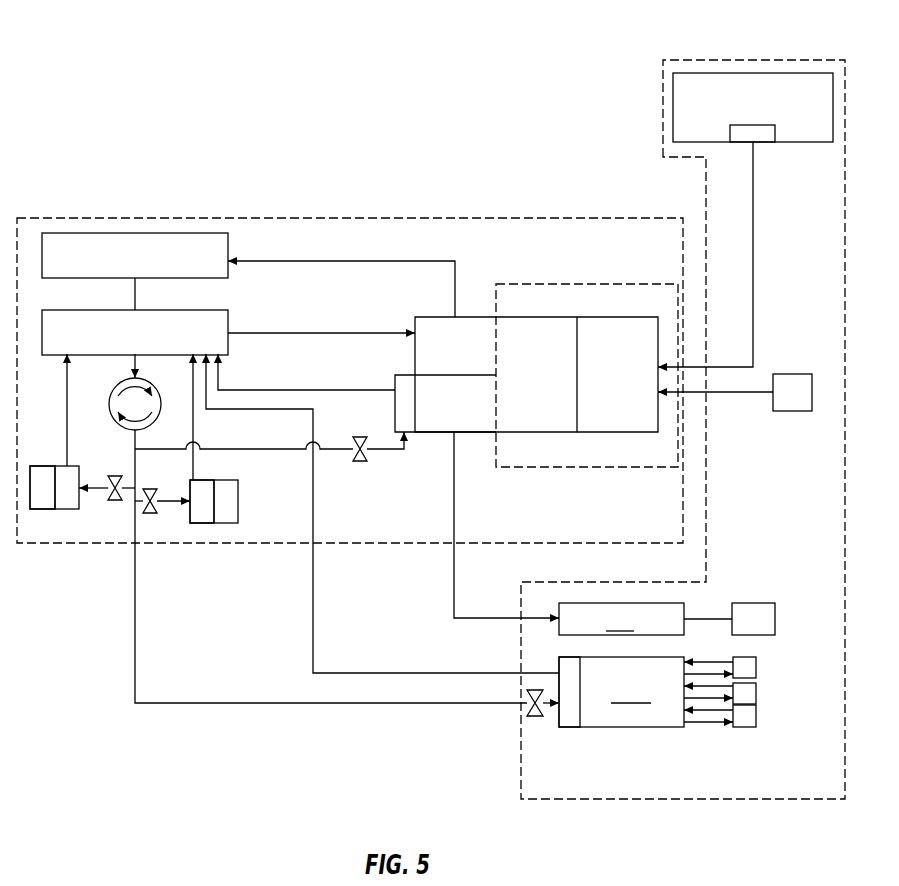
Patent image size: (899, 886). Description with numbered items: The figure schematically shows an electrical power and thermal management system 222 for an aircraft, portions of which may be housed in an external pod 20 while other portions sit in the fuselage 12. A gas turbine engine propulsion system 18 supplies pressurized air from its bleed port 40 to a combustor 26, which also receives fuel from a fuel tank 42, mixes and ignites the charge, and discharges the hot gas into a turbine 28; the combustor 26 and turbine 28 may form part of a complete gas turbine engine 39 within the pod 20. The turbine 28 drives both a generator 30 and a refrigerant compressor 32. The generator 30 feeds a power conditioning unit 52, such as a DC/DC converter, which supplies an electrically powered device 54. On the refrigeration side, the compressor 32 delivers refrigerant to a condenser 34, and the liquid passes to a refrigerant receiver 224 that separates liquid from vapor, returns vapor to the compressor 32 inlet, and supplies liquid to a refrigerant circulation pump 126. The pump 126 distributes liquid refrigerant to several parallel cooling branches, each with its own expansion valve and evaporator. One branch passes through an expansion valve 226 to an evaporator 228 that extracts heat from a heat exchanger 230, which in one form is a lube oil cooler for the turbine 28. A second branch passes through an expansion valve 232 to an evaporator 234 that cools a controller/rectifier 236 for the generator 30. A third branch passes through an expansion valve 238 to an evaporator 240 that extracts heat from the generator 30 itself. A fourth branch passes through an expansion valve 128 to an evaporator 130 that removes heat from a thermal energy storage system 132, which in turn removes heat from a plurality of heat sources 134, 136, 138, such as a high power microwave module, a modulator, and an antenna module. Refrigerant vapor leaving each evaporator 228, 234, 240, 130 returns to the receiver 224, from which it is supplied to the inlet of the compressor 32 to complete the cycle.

The electrical power and thermal management system 222 is at (143, 93).
The fuselage 12 is at (663, 108).
The gas turbine engine propulsion system 18 is at (753, 73).
The bleed port 40 is at (752, 125).
The fuel tank 42 is at (793, 411).
The external pod 20 is at (350, 218).
The condenser 34 is at (228, 245).
The refrigerant receiver 224 is at (228, 345).
The gas turbine engine 39 is at (600, 284).
The refrigerant compressor 32 is at (462, 317).
The turbine 28 is at (538, 317).
The combustor 26 is at (620, 318).
The evaporator 240 is at (395, 415).
The generator 30 is at (465, 432).
The expansion valve 238 is at (362, 461).
The refrigerant circulation pump 126 is at (110, 410).
The heat exchanger 230 is at (43, 466).
The evaporator 228 is at (75, 509).
The expansion valve 226 is at (115, 500).
The expansion valve 232 is at (150, 514).
The evaporator 234 is at (200, 523).
The controller/rectifier 236 is at (230, 480).
The power conditioning unit 52 is at (621, 619).
The electrically powered device 54 is at (752, 603).
The thermal energy storage system 132 is at (621, 692).
The evaporator 130 is at (570, 727).
The expansion valve 128 is at (535, 717).
The heat source 134 is at (745, 657).
The heat source 136 is at (756, 692).
The heat source 138 is at (745, 727).